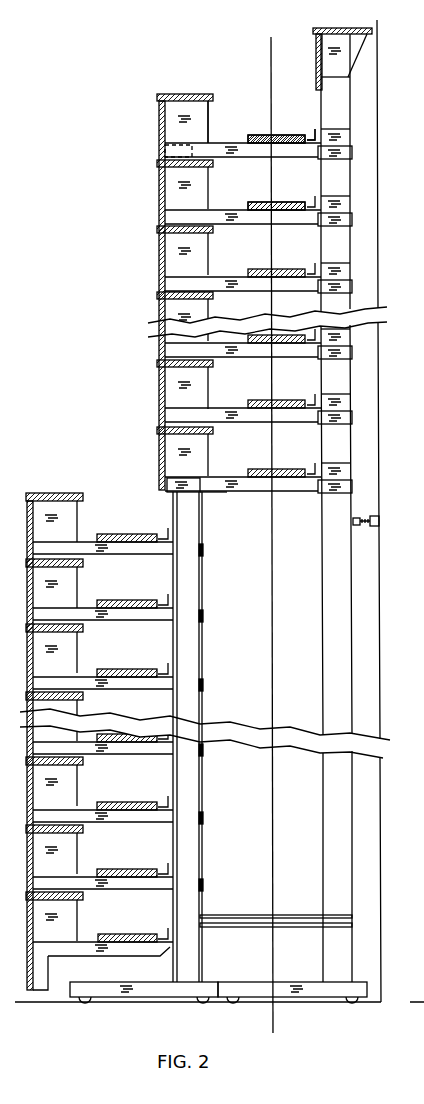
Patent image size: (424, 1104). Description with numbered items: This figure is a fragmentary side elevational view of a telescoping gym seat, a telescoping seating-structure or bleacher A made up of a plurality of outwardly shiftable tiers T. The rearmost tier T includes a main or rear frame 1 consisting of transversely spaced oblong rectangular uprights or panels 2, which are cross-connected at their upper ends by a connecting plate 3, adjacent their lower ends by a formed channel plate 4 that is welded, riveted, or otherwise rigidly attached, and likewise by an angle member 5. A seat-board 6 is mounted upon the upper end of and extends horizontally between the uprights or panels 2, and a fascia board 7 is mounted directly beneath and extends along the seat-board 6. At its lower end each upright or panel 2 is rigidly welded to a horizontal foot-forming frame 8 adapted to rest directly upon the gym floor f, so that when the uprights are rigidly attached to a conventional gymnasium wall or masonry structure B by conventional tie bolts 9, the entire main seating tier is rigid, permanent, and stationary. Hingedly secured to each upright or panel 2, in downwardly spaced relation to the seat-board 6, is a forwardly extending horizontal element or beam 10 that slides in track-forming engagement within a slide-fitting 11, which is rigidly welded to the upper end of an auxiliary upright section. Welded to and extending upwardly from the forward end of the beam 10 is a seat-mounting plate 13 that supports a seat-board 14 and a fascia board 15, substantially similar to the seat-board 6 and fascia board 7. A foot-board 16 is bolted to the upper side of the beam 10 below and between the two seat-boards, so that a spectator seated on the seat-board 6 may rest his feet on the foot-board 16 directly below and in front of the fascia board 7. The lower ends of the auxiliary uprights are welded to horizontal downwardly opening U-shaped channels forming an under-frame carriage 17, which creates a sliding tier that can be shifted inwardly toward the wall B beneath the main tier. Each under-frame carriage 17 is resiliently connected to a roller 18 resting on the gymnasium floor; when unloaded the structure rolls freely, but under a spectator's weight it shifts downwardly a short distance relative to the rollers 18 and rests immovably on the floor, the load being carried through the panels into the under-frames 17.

The main or rear frame 1 is at (353, 115).
The uprights or panels 2 is at (350, 87).
The connecting plate 3 is at (357, 62).
The formed channel plate 4 is at (265, 37).
The angle member 5 is at (313, 135).
The seat-board 6 is at (348, 28).
The fascia board 7 is at (315, 55).
The horizontal foot-forming frame 8 is at (262, 993).
The tie bolts 9 is at (368, 517).
The horizontal element or beam 10 is at (224, 145).
The slide-fitting 11 is at (172, 138).
The seat-mounting plate 13 is at (208, 117).
The seat-board 14 is at (178, 97).
The fascia board 15 is at (160, 107).
The foot-board 16 is at (257, 145).
The under-frame carriage 17 is at (157, 998).
The roller 18 is at (77, 1003).
The telescoping seating-structure or bleacher A is at (385, 44).
The gymnasium wall or masonry structure B is at (381, 457).
The tier T is at (160, 71).
The gym floor f is at (118, 1005).